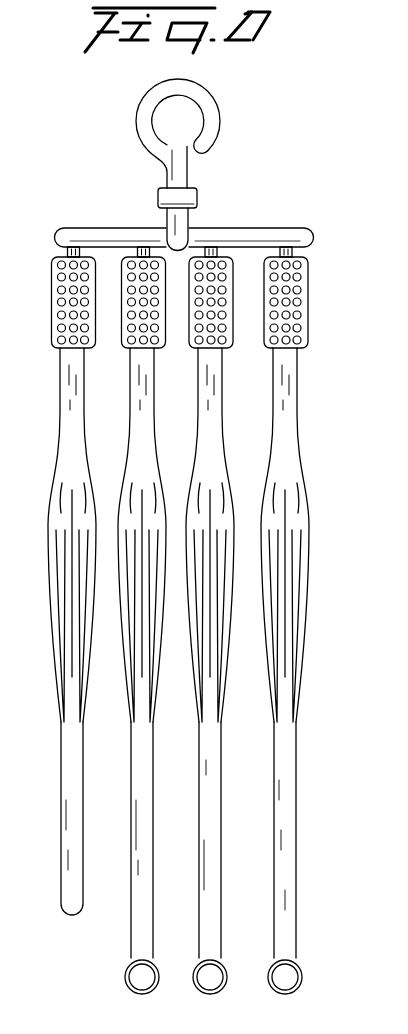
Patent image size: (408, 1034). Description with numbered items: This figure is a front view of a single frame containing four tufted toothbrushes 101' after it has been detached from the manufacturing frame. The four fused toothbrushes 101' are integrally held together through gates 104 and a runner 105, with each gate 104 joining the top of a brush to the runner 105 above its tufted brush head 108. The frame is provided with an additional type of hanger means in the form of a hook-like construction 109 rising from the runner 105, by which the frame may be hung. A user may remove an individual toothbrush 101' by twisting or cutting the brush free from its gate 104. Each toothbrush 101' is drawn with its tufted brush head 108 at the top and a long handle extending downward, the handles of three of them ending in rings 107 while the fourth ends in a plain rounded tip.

The hook-like construction 109 is at (206, 110).
The runner 105 is at (215, 238).
The gate 104 is at (220, 253).
The tufted brush head 108 is at (58, 343).
The toothbrush 101' is at (157, 653).
The end ring 107 is at (277, 978).